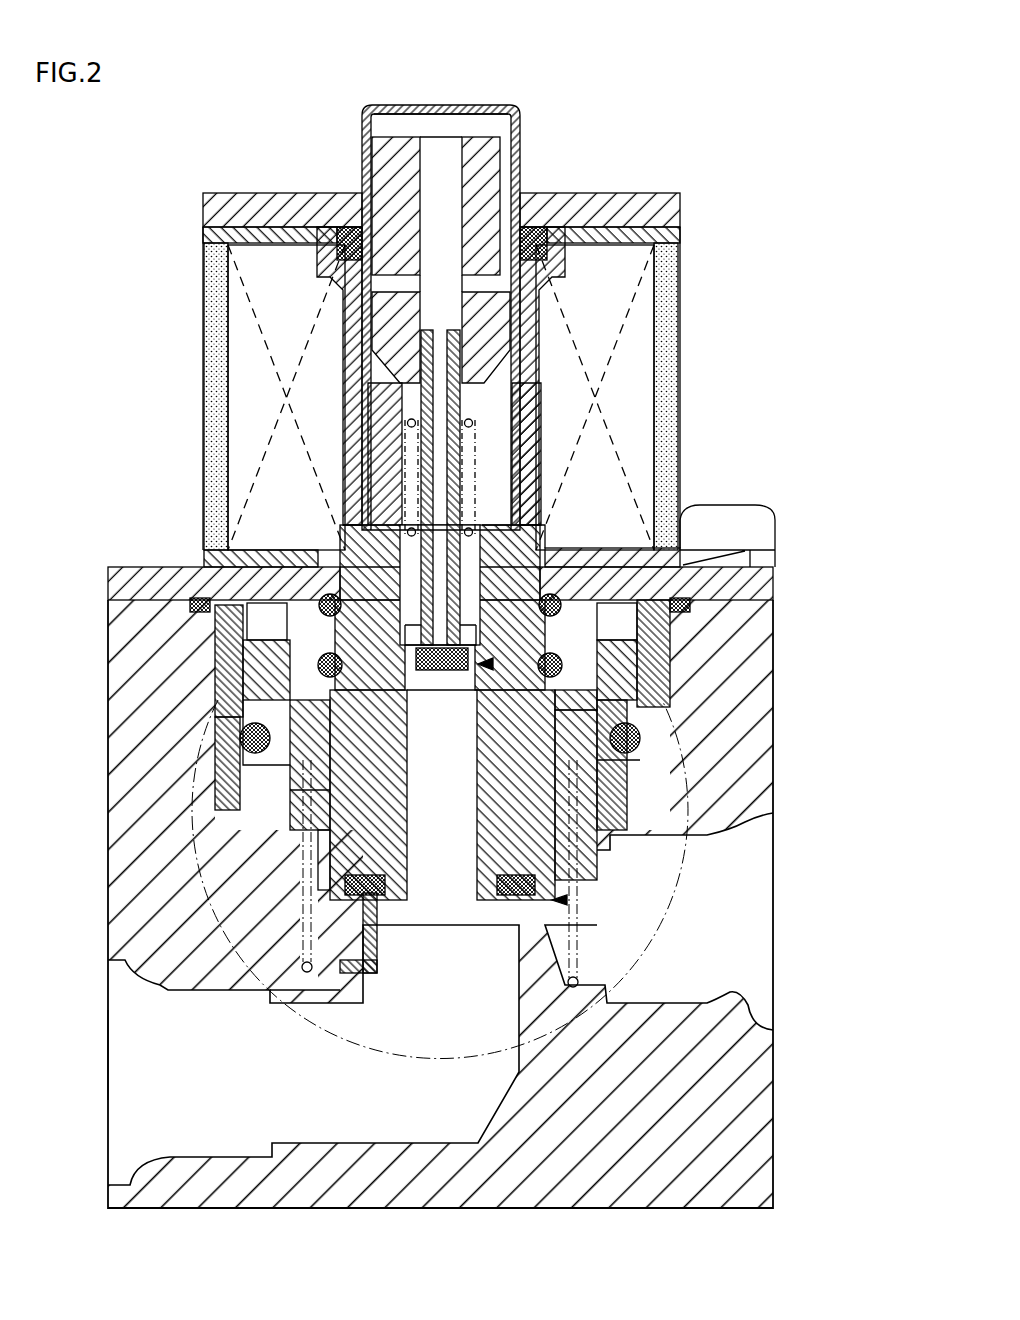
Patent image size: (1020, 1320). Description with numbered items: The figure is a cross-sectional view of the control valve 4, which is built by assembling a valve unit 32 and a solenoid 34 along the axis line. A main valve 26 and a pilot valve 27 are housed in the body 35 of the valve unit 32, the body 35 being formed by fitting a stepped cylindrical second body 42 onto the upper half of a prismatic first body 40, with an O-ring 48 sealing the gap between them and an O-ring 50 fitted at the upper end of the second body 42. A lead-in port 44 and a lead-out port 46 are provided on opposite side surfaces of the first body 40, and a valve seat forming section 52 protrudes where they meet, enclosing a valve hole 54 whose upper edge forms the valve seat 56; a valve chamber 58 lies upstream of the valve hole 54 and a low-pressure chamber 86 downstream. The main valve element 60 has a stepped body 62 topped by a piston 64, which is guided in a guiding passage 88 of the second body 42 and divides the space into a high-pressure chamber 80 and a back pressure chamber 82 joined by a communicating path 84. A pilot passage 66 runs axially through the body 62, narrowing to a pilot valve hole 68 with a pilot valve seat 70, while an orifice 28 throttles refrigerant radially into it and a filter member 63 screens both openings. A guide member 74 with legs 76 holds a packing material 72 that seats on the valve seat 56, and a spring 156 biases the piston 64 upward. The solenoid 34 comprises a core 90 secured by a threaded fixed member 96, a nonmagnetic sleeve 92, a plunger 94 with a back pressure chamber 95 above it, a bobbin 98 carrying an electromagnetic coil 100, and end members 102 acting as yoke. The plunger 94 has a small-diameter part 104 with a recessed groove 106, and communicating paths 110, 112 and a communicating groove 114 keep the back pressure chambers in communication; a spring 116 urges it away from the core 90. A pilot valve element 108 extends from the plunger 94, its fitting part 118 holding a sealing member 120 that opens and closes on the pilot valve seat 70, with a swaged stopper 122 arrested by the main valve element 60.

The control valve 4 is at (693, 168).
The main valve 26 is at (700, 910).
The pilot valve 27 is at (520, 655).
The orifice 28 is at (630, 800).
The valve unit 32 is at (752, 478).
The solenoid 34 is at (738, 290).
The body 35 is at (828, 615).
The first body 40 is at (650, 680).
The second body 42 is at (660, 650).
The lead-in port 44 is at (740, 915).
The lead-out port 46 is at (130, 1055).
The O-ring 48 is at (230, 715).
The O-ring 50 is at (270, 650).
The valve seat forming section 52 is at (340, 940).
The valve hole 54 is at (275, 960).
The valve seat 56 is at (335, 920).
The valve chamber 58 is at (330, 880).
The main valve element 60 is at (590, 790).
The body 62 is at (640, 735).
The filter member 63 is at (330, 790).
The piston 64 is at (560, 700).
The pilot passage 66 is at (620, 760).
The pilot valve hole 68 is at (470, 675).
The pilot valve seat 70 is at (773, 590).
The packing material 72 is at (540, 882).
The guide member 74 is at (520, 902).
The legs 76 is at (377, 947).
The high-pressure chamber 80 is at (320, 845).
The back pressure chamber 82 is at (318, 665).
The communicating path 84 is at (250, 760).
The low-pressure chamber 86 is at (345, 1080).
The guiding passage 88 is at (240, 738).
The core 90 is at (515, 505).
The sleeve 92 is at (522, 160).
The plunger 94 is at (505, 360).
The back pressure chamber 95 is at (503, 118).
The fixed member 96 is at (400, 567).
The bobbin 98 is at (345, 375).
The electromagnetic coil 100 is at (228, 300).
The end members 102 is at (203, 205).
The small-diameter part 104 is at (470, 420).
The recessed groove 106 is at (470, 395).
The pilot valve element 108 is at (700, 545).
The communicating path 110 is at (650, 215).
The communicating path 112 is at (340, 240).
The communicating groove 114 is at (560, 292).
The spring 116 is at (395, 470).
The fitting part 118 is at (250, 603).
The sealing member 120 is at (340, 525).
The stopper 122 is at (195, 605).
The spring 156 is at (305, 810).